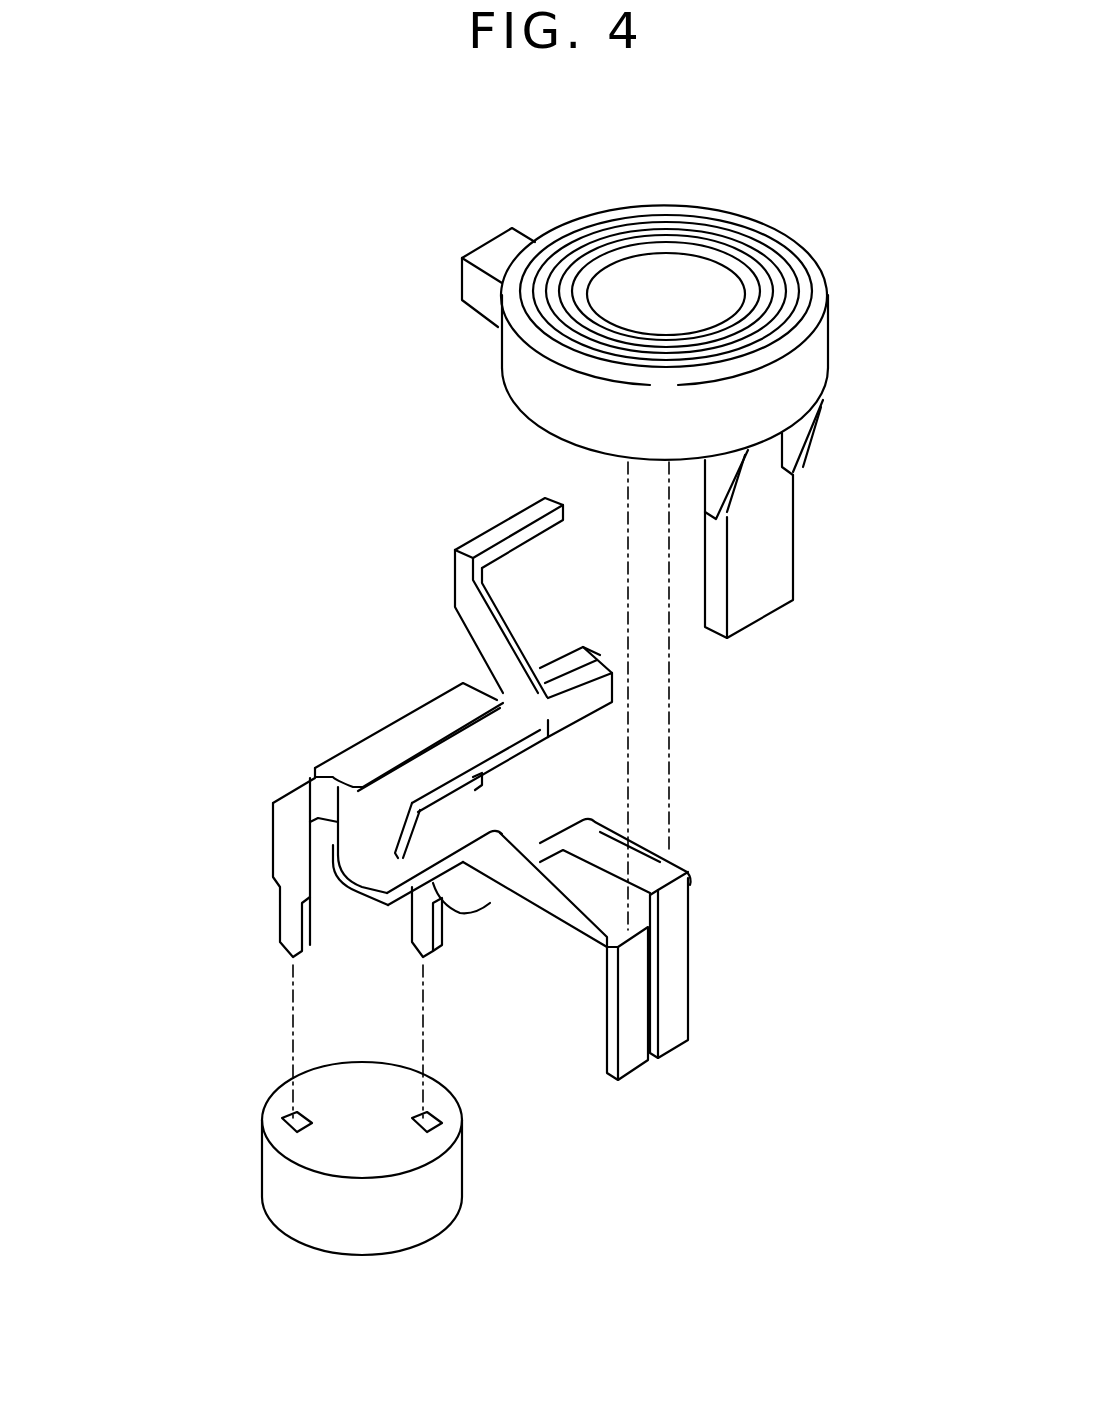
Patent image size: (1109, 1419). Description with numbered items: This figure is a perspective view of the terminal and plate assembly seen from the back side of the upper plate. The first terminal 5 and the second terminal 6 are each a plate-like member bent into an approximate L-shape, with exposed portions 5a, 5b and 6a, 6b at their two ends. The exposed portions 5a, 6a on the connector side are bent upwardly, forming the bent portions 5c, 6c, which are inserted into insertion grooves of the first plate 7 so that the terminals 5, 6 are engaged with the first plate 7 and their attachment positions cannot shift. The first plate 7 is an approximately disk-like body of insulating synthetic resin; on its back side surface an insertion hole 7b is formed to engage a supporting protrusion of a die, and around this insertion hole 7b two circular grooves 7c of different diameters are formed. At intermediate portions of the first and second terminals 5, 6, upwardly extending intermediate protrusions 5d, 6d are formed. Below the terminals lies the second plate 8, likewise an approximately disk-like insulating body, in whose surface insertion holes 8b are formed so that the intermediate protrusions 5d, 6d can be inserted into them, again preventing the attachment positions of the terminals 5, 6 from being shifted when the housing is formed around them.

The first terminal 5 is at (584, 831).
The exposed portion 5a is at (680, 1047).
The exposed portion 5b is at (583, 697).
The bent portion 5c is at (655, 866).
The intermediate protrusion 5d is at (418, 928).
The second terminal 6 is at (508, 858).
The exposed portion 6a is at (635, 1067).
The exposed portion 6b is at (513, 523).
The bent portion 6c is at (585, 912).
The intermediate protrusion 6d is at (288, 921).
The first plate 7 is at (826, 345).
The insertion hole 7b is at (664, 275).
The circular grooves 7c is at (740, 248).
The second plate 8 is at (414, 1236).
The insertion holes 8b is at (421, 1118).